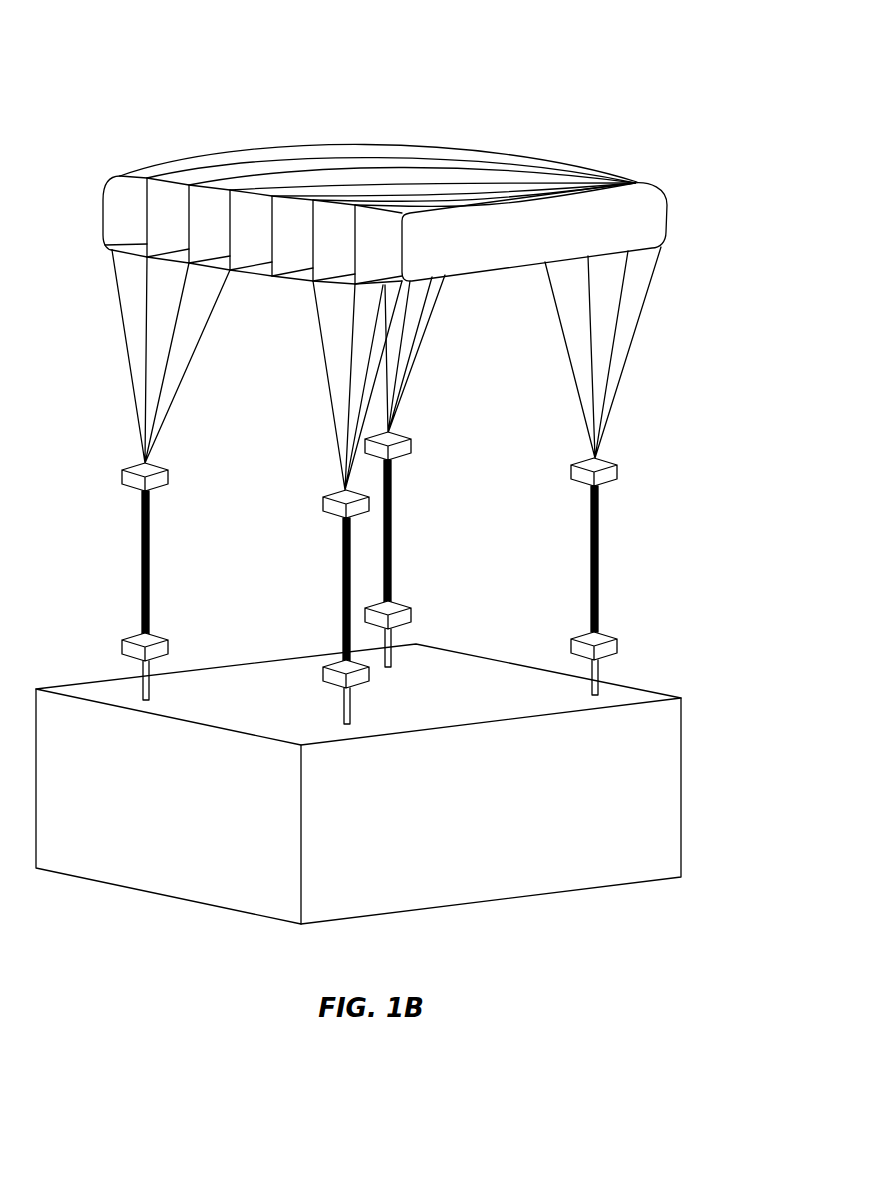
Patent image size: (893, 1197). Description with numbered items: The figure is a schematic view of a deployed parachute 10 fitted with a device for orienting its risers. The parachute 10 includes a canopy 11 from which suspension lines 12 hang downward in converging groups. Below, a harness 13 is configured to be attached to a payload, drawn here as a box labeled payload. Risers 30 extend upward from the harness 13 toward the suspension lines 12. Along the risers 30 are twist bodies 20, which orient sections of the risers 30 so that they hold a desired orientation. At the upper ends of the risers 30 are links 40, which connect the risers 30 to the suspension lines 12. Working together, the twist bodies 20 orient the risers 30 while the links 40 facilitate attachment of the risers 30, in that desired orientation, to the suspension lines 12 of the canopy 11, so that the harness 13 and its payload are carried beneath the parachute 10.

The parachute 10 is at (152, 84).
The canopy 11 is at (670, 201).
The suspension lines 12 is at (118, 321).
The harness 13 is at (684, 766).
The twist bodies 20 is at (120, 639).
The risers 30 is at (140, 562).
The links 40 is at (120, 474).